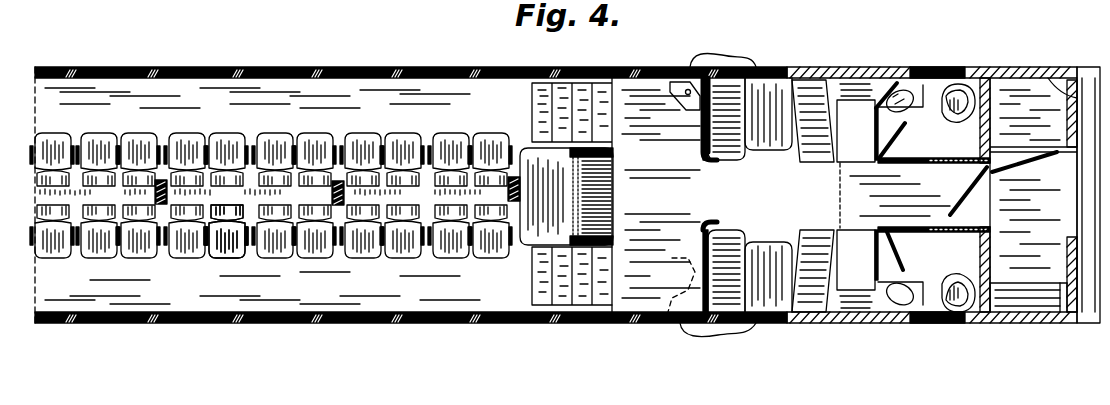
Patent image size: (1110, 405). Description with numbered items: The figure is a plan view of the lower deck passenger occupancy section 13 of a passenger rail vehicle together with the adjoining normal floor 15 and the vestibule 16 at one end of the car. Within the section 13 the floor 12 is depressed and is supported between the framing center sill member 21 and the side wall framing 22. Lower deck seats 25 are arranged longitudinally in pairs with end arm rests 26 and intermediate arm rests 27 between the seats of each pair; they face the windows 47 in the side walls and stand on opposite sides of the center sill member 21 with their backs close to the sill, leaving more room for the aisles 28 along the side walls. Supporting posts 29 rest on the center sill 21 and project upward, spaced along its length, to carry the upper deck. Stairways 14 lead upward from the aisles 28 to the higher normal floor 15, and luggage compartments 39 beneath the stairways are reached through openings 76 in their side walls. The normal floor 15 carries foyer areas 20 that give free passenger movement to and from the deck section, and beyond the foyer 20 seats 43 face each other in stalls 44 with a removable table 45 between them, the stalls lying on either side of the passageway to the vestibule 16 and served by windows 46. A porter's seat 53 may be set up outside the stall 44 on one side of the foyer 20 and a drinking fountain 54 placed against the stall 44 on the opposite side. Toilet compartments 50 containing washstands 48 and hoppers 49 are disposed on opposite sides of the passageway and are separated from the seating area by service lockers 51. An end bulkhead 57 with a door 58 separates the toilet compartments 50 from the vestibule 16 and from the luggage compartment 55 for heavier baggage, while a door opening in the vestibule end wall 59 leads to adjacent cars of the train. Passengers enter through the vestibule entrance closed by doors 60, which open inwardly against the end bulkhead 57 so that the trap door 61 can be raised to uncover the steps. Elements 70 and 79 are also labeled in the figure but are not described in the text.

The floor 12 is at (218, 324).
The lower deck passenger occupancy section 13 is at (204, 122).
The stairways 14 is at (599, 98).
The normal floor 15 is at (803, 237).
The vestibule 16 is at (1008, 244).
The foyer areas 20 is at (661, 194).
The framing center sill member 21 is at (42, 193).
The side wall framing 22 is at (150, 67).
The lower deck seats 25 is at (148, 137).
The end arm rests 26 is at (72, 252).
The intermediate arm rests 27 is at (466, 172).
The aisles 28 is at (246, 102).
The supporting posts 29 is at (157, 183).
The luggage compartments 39 is at (565, 207).
The seats 43 is at (720, 130).
The stalls 44 is at (712, 160).
The removable table 45 is at (765, 243).
The windows 46 is at (718, 198).
The windows 47 is at (98, 67).
The washstands 48 is at (902, 93).
The hoppers 49 is at (960, 93).
The toilet compartments 50 is at (900, 233).
The service lockers 51 is at (857, 196).
The porter's seat 53 is at (662, 208).
The drinking fountain 54 is at (690, 107).
The luggage compartment 55 is at (1033, 195).
The end bulkhead 57 is at (992, 128).
The door 58 is at (978, 193).
The vestibule end wall 59 is at (1048, 77).
The doors 60 is at (1018, 324).
The trap door 61 is at (1050, 302).
The partition wall 70 is at (827, 323).
The openings 76 is at (468, 106).
The back rest 79 is at (617, 183).